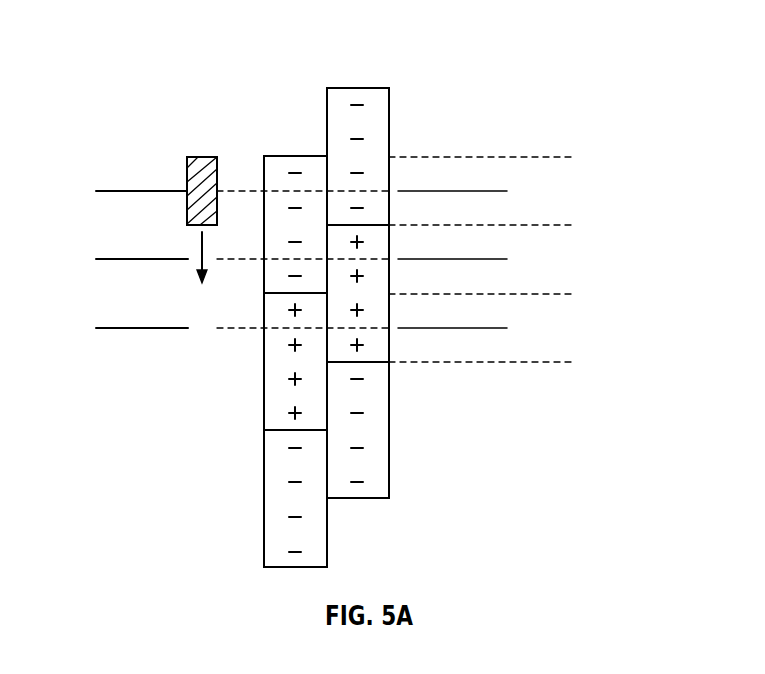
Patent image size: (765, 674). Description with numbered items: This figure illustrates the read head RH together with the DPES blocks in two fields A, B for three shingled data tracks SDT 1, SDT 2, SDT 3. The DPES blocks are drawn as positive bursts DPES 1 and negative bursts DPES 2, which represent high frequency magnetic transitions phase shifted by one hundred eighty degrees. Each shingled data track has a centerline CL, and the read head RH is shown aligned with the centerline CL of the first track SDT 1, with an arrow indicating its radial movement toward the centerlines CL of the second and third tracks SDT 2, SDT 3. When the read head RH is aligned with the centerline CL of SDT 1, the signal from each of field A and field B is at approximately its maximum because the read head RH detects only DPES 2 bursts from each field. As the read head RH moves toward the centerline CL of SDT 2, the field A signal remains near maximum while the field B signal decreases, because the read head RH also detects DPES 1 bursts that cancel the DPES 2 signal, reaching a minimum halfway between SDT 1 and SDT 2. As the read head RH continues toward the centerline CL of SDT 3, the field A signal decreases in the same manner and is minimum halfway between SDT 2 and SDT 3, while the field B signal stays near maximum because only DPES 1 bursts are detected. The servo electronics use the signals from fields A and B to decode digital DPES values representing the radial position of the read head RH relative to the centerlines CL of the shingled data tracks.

The field A is at (264, 156).
The field B is at (389, 88).
The read head RH is at (187, 172).
The centerline CL is at (138, 192).
The DPES1 bursts DPES 1 is at (282, 413).
The DPES2 bursts DPES 2 is at (270, 178).
The first shingled data track SDT 1 is at (573, 157).
The second shingled data track SDT 2 is at (573, 225).
The third shingled data track SDT 3 is at (573, 294).